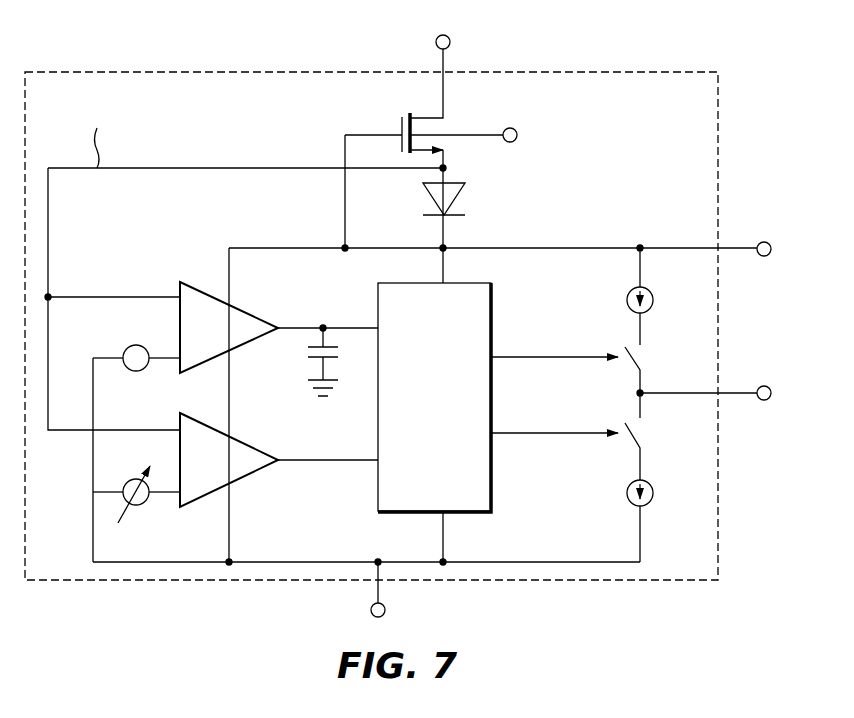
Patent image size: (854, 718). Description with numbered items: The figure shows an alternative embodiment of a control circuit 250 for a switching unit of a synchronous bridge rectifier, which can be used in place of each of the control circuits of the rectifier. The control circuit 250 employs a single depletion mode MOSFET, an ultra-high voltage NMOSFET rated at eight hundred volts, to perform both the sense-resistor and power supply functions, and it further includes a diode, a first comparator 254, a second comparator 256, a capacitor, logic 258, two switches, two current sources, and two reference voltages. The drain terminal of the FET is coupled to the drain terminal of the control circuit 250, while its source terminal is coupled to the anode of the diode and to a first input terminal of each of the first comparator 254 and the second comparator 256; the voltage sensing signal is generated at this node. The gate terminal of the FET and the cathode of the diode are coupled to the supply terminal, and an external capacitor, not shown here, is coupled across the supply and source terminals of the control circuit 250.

The control circuit 250 is at (614, 71).
The first comparator 254 is at (250, 312).
The second comparator 256 is at (250, 444).
The logic 258 is at (448, 418).